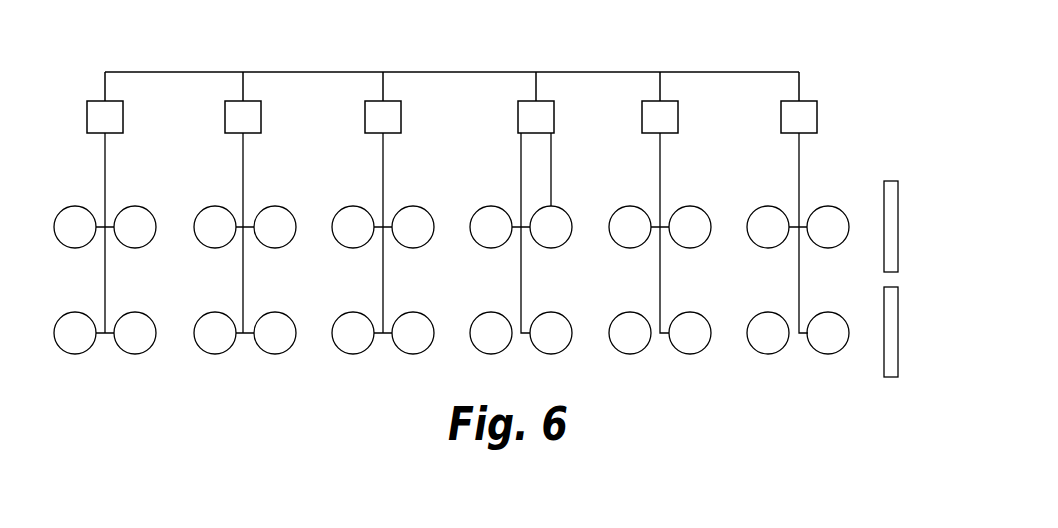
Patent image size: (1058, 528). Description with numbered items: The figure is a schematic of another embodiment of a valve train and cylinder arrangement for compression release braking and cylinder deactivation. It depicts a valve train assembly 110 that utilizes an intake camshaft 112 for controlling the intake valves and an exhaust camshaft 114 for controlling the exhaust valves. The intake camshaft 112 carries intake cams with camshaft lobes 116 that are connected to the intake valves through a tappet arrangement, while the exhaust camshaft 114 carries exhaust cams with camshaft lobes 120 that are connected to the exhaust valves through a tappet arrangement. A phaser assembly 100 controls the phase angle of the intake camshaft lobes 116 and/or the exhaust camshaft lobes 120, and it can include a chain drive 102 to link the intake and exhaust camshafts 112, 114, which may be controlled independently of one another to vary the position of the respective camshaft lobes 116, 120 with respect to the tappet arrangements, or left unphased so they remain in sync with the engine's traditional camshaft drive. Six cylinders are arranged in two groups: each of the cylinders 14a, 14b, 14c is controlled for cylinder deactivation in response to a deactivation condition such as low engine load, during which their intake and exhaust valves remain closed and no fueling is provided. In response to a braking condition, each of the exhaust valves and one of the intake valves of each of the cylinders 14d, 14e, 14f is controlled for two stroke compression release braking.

The valve train assembly 110 is at (485, 70).
The intake camshaft 112 is at (452, 50).
The exhaust camshaft 114 is at (643, 72).
The camshaft lobes 116 is at (496, 128).
The camshaft lobes 120 is at (123, 128).
The cylinder 14a is at (58, 290).
The cylinder 14b is at (247, 352).
The cylinder 14c is at (382, 355).
The cylinder 14d is at (513, 192).
The cylinder 14e is at (598, 228).
The cylinder 14f is at (740, 220).
The phaser assembly 100 is at (902, 315).
The chain drive 102 is at (902, 250).